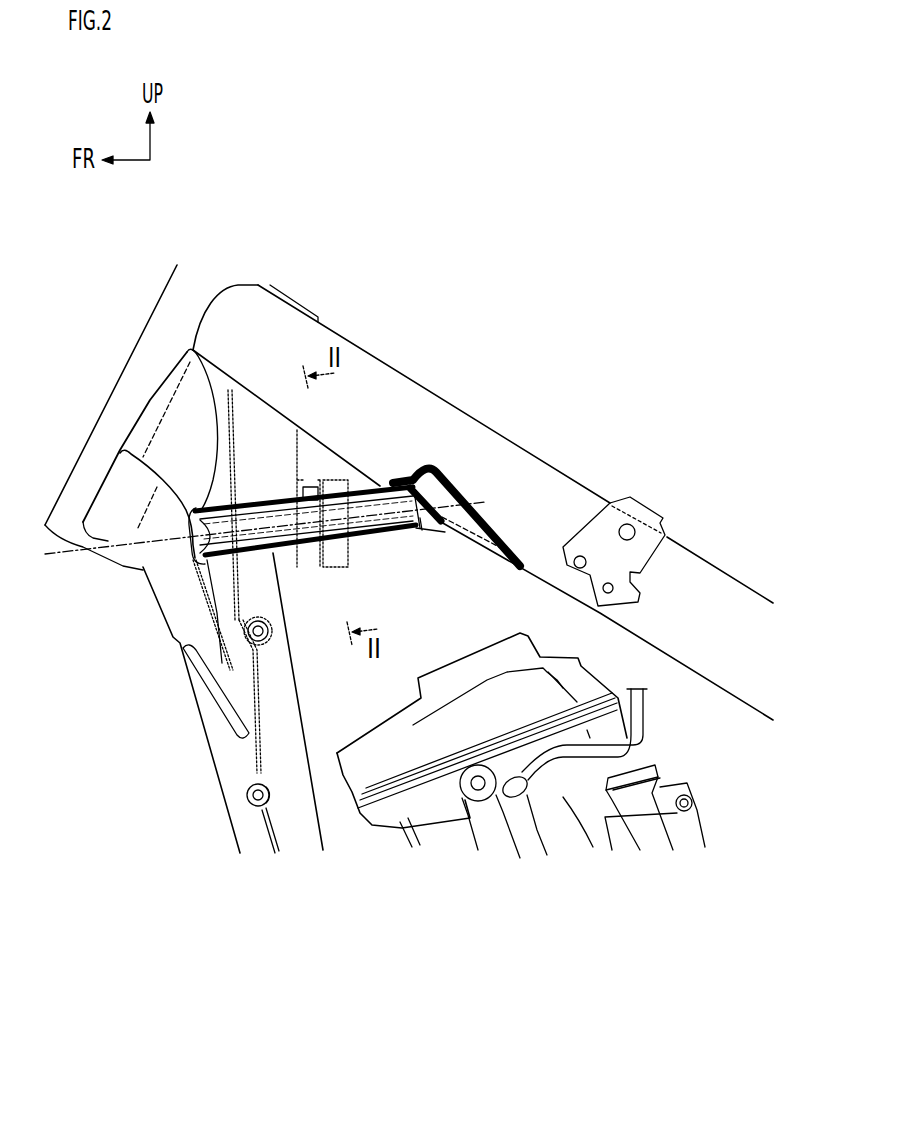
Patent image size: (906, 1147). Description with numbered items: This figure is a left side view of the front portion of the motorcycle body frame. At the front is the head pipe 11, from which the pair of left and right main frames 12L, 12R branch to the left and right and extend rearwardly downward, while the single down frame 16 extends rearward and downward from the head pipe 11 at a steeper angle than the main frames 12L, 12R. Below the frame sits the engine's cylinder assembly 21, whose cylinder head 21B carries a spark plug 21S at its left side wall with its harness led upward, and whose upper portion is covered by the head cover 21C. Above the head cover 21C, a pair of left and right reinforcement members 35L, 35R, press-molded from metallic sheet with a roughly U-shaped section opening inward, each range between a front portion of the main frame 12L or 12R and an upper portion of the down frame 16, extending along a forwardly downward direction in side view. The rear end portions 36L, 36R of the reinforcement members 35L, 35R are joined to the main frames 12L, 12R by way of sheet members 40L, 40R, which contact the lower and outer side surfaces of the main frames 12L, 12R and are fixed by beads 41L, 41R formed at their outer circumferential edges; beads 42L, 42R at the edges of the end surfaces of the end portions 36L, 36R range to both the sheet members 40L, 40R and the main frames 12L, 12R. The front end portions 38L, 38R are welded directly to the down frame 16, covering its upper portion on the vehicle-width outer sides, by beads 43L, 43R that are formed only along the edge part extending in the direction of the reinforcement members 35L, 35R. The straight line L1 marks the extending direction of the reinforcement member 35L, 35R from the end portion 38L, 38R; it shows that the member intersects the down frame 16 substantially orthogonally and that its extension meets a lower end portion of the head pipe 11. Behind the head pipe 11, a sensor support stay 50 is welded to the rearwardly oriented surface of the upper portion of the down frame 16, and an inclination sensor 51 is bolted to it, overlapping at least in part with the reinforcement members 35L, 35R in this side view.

The head pipe 11 is at (152, 333).
The left main frame 12L is at (483, 502).
The right main frame 12R is at (568, 490).
The down frame 16 is at (221, 806).
The cylinder assembly 21 is at (539, 800).
The head cover 21C is at (352, 812).
The cylinder head 21B is at (457, 845).
The spark plug 21S is at (525, 847).
The left reinforcement member 35L is at (351, 386).
The right reinforcement member 35R is at (365, 474).
The end portion of left reinforcement member 36L is at (474, 568).
The end portion of right reinforcement member 36R is at (423, 528).
The end portion of left reinforcement member 38L is at (162, 619).
The end portion of right reinforcement member 38R is at (226, 553).
The left sheet member 40L is at (423, 426).
The right sheet member 40R is at (423, 426).
The bead 41L is at (547, 454).
The bead 41R is at (490, 502).
The bead 42L is at (469, 425).
The bead 42R is at (408, 478).
The bead 43L is at (200, 601).
The bead 43R is at (198, 447).
The sensor support stay 50 is at (305, 485).
The inclination sensor 51 is at (340, 478).
The straight line L1 is at (73, 563).